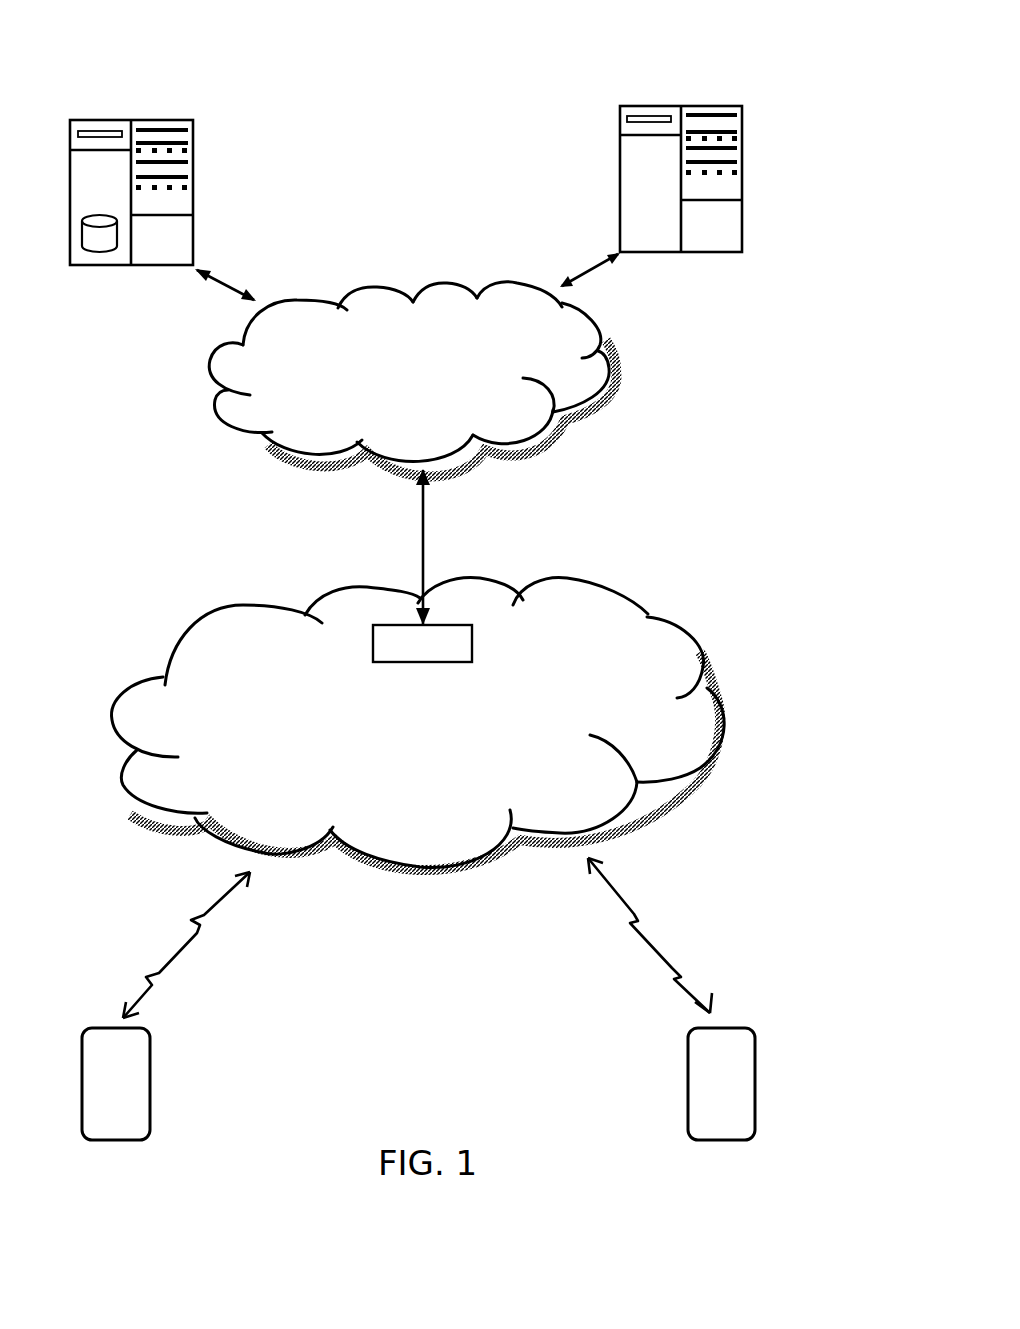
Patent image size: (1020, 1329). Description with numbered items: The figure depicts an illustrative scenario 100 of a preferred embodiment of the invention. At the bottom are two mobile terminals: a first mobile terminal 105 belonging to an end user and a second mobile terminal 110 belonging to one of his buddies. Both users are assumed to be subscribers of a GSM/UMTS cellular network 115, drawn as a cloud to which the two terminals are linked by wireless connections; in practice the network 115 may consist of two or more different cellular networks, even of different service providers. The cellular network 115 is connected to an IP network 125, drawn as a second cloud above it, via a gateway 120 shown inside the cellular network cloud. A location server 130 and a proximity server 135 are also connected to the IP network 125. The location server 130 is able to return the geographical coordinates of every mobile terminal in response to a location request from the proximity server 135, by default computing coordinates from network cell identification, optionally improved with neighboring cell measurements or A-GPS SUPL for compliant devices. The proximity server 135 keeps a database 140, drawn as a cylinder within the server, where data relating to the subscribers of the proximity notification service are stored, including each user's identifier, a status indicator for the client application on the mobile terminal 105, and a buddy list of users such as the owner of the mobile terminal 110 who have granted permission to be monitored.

The illustrative scenario 100 is at (400, 88).
The first mobile terminal 105 is at (123, 1140).
The second mobile terminal 110 is at (687, 1122).
The GSM/UMTS cellular network 115 is at (437, 800).
The gateway 120 is at (410, 656).
The IP network 125 is at (431, 376).
The location server 130 is at (620, 165).
The proximity server 135 is at (194, 169).
The database 140 is at (98, 250).